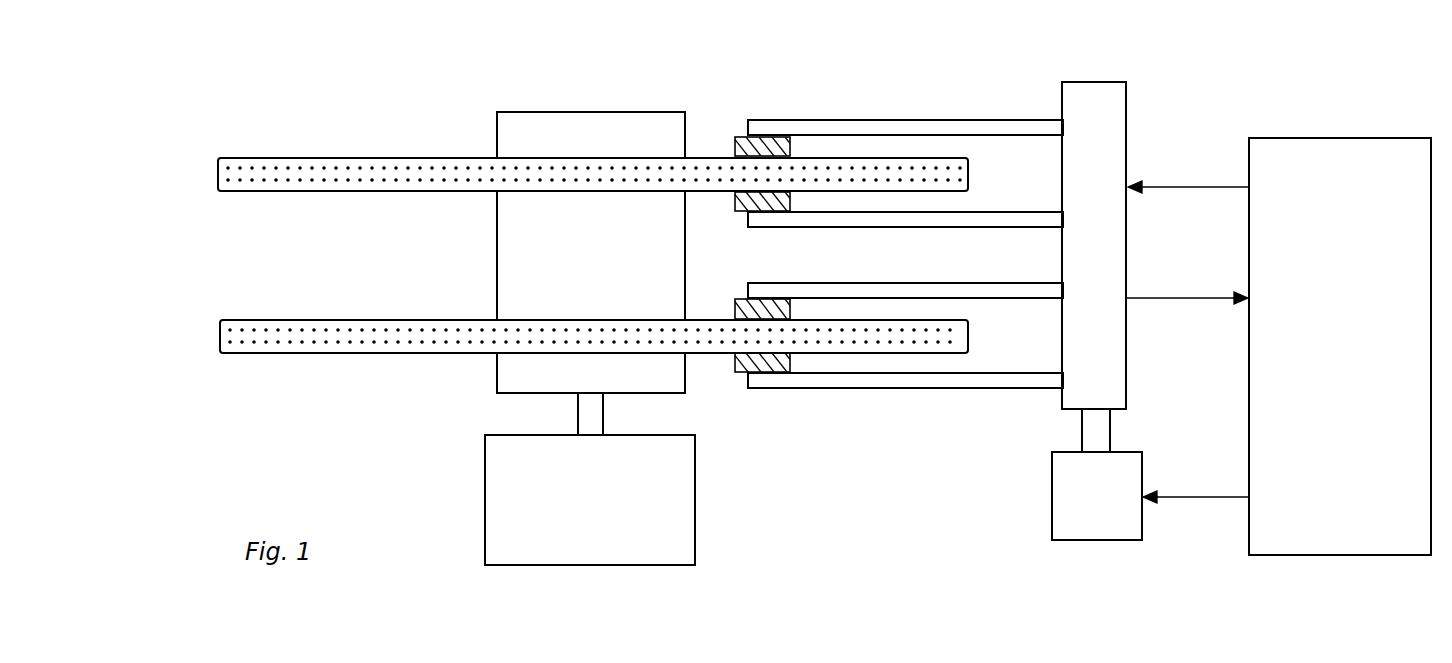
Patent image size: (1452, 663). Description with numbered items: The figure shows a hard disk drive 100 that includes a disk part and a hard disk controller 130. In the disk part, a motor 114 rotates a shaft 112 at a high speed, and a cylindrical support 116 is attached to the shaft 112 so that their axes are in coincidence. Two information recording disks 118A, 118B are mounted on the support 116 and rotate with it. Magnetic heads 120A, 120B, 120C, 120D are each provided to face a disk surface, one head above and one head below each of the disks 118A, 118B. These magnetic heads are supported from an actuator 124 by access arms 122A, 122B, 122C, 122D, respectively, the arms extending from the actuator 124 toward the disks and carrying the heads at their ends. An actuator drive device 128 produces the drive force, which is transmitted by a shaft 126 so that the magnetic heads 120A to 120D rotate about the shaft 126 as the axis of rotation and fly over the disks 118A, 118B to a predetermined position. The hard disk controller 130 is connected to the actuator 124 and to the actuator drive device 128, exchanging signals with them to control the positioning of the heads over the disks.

The hard disk drive 100 is at (378, 120).
The shaft 112 is at (578, 408).
The motor 114 is at (612, 530).
The cylindrical support 116 is at (538, 111).
The information recording disk 118A is at (250, 157).
The information recording disk 118B is at (250, 355).
The magnetic head 120A is at (736, 138).
The magnetic head 120B is at (741, 211).
The magnetic head 120C is at (742, 298).
The magnetic head 120D is at (741, 373).
The access arm 122A is at (863, 120).
The access arm 122B is at (913, 228).
The access arm 122C is at (890, 282).
The access arm 122D is at (882, 389).
The actuator 124 is at (1128, 97).
The shaft 126 is at (1080, 440).
The actuator drive device 128 is at (1052, 503).
The hard disk controller 130 is at (1364, 435).